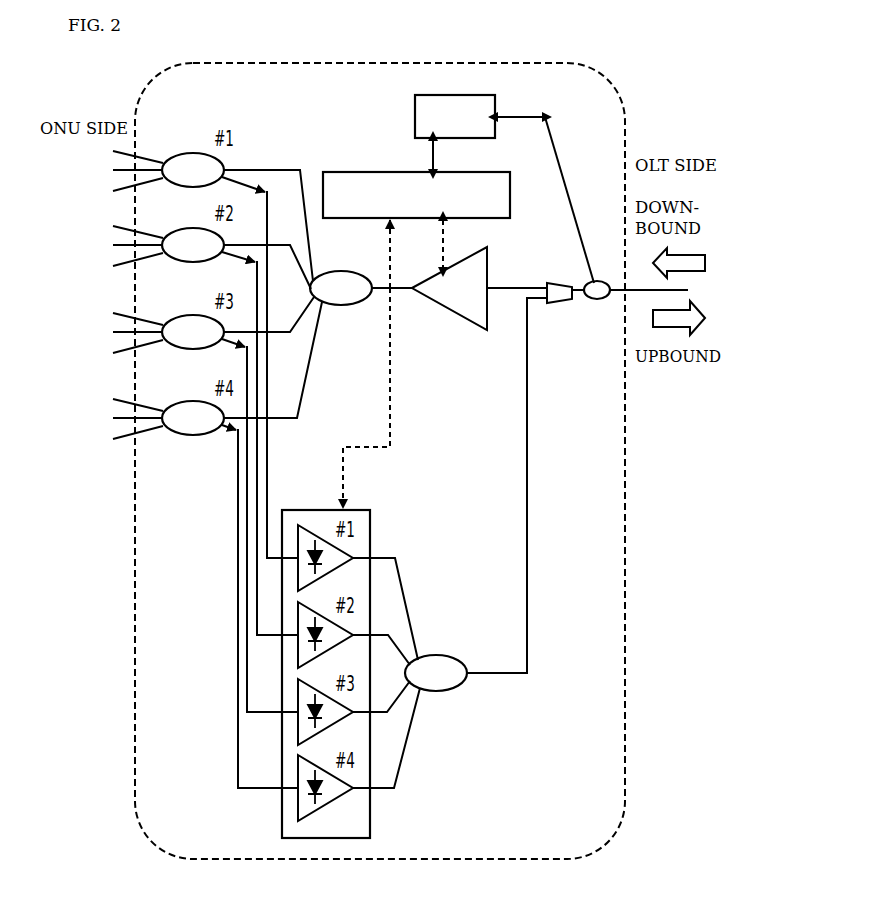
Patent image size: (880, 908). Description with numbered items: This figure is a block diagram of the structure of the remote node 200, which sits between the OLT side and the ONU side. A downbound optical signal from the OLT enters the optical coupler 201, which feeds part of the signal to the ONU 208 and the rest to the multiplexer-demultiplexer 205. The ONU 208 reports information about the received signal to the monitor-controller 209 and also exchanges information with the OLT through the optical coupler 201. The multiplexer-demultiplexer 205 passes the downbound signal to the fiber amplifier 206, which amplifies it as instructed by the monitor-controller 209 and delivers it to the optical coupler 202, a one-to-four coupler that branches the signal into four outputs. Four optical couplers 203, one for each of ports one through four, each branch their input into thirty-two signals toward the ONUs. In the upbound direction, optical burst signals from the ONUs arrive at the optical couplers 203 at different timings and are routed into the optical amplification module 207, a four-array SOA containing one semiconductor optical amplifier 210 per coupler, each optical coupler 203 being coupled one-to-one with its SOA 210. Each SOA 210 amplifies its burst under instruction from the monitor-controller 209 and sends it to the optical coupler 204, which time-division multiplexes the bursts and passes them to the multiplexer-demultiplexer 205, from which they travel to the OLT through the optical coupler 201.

The remote node 200 is at (577, 63).
The optical coupler 201 is at (594, 300).
The optical coupler 202 is at (348, 271).
The optical coupler 203 is at (168, 313).
The optical coupler 204 is at (452, 657).
The multiplexer-demultiplexer 205 is at (549, 282).
The fiber amplifier 206 is at (464, 320).
The optical amplification module 207 is at (370, 519).
The ONU 208 is at (414, 98).
The monitor-controller 209 is at (350, 171).
The semiconductor optical amplifier (SOA) 210 is at (310, 526).